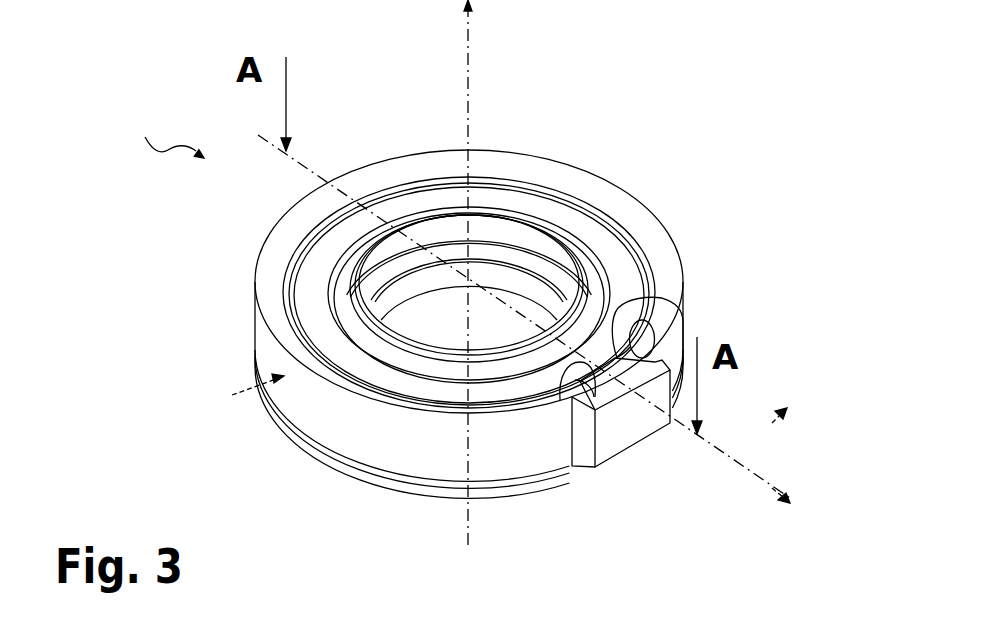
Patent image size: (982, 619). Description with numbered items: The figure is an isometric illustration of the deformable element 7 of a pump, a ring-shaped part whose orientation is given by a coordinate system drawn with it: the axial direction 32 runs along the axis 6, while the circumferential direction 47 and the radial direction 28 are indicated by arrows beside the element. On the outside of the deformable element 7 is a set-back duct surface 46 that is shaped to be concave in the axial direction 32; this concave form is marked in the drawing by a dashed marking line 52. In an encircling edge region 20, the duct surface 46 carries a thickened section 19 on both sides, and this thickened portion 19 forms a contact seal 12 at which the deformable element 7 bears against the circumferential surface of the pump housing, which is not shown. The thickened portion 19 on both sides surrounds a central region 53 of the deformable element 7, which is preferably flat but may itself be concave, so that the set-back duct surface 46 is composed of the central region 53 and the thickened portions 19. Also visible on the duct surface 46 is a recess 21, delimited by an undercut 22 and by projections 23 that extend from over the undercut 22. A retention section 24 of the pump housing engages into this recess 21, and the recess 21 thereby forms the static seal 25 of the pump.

The axis 6 is at (469, 142).
The deformable element 7 is at (164, 133).
The contact seal 12 is at (272, 262).
The thickened section 19 is at (280, 232).
The encircling edge region 20 is at (343, 185).
The recess 21 is at (672, 398).
The undercut 22 is at (648, 298).
The projections 23 is at (588, 380).
The retention section 24 is at (613, 437).
The static seal 25 is at (622, 413).
The radial direction 28 is at (762, 482).
The axial direction 32 is at (469, 43).
The set-back duct surface 46 is at (257, 375).
The circumferential direction 47 is at (762, 433).
The dashed marking line 52 is at (254, 283).
The central region 53 is at (257, 347).